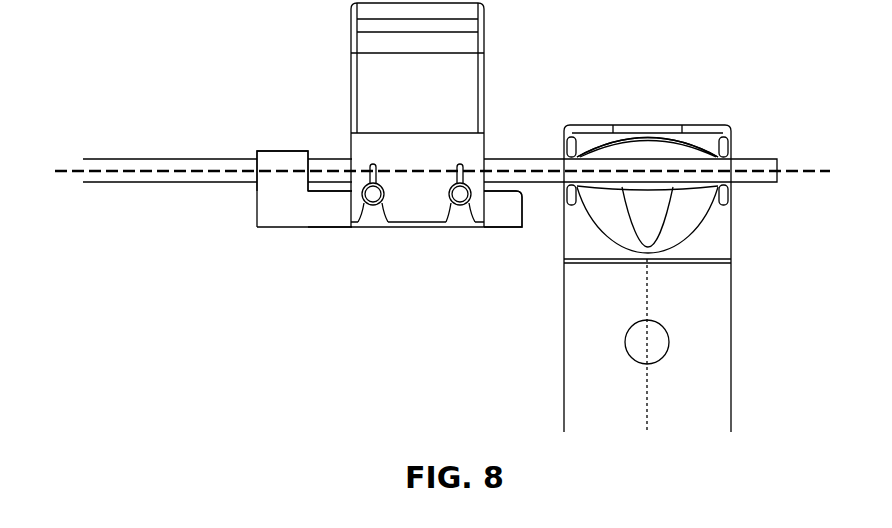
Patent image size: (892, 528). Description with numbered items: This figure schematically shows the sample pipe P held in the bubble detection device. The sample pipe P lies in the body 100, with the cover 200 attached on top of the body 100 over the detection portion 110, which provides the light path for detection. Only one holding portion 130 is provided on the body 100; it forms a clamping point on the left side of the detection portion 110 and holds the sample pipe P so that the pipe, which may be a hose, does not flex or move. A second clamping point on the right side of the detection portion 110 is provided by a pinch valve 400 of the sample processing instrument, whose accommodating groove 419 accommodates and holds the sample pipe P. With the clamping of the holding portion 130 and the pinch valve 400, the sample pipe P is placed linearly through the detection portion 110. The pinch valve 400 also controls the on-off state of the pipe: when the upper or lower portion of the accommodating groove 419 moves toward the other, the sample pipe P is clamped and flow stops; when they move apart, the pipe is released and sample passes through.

The sample pipe P is at (148, 176).
The body 100 is at (248, 211).
The detection portion 110 is at (458, 213).
The holding portion 130 is at (270, 158).
The cover 200 is at (345, 81).
The pinch valve 400 is at (690, 312).
The accommodating groove 419 is at (693, 152).